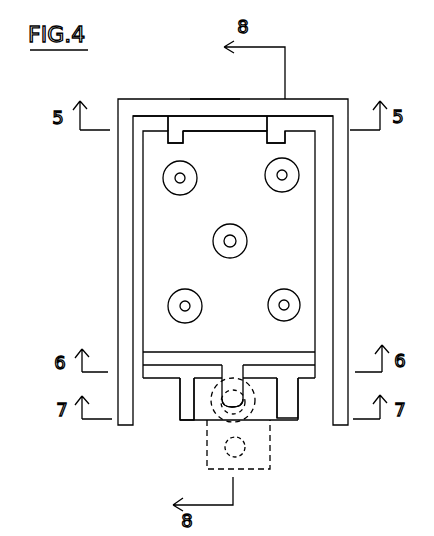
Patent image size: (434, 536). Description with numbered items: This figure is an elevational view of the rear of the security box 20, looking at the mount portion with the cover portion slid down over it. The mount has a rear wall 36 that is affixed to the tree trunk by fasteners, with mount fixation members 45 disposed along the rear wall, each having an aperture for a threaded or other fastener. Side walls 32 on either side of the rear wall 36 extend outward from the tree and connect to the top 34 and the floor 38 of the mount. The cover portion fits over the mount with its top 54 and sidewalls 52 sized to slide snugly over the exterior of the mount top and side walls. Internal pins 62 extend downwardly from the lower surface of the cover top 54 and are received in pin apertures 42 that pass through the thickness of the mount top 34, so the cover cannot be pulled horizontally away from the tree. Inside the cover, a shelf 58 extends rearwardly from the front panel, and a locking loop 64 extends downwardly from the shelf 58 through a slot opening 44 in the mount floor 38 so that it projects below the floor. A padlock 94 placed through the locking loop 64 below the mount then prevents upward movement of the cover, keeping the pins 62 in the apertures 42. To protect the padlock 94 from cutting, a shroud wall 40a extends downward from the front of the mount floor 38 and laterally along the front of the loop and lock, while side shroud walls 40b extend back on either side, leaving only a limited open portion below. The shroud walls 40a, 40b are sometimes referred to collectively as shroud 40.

The security box 20 is at (345, 53).
The side walls 32 is at (138, 227).
The top 34 is at (242, 128).
The rear wall 36 is at (245, 328).
The floor 38 is at (272, 376).
The contact pins 40 is at (180, 184).
The shroud wall 40a is at (277, 418).
The shroud walls 40b is at (287, 398).
The pin apertures 42 is at (168, 117).
The slot opening 44 is at (233, 364).
The mount fixation members 45 is at (266, 182).
The sidewalls 52 is at (123, 285).
The top 54 is at (214, 99).
The shelf 58 is at (192, 375).
The internal pins 62 is at (177, 143).
The locking loop 64 is at (232, 406).
The padlock 94 is at (267, 453).